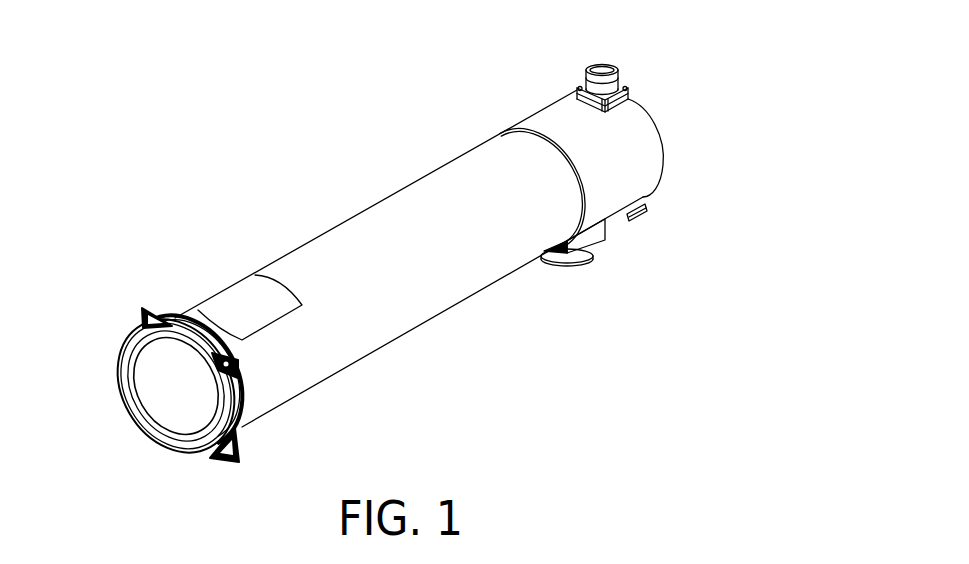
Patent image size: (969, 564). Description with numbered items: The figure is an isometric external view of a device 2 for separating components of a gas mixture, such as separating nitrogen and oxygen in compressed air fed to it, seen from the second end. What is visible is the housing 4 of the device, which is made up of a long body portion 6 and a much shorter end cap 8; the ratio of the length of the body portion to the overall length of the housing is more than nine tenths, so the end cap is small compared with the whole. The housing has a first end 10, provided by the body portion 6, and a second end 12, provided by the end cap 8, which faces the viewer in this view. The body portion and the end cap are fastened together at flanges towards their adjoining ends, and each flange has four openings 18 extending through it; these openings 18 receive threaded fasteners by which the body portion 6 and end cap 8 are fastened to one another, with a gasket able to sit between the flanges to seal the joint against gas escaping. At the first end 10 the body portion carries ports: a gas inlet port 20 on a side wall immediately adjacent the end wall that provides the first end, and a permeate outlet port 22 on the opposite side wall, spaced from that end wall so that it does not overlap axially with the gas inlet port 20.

The device for separating components of a gas mixture 2 is at (259, 100).
The housing 4 is at (392, 287).
The body portion 6 is at (502, 273).
The end cap 8 is at (131, 341).
The first end 10 is at (658, 192).
The second end 12 is at (163, 444).
The openings 18 is at (160, 311).
The gas inlet port 20 is at (609, 63).
The permeate outlet port 22 is at (580, 266).